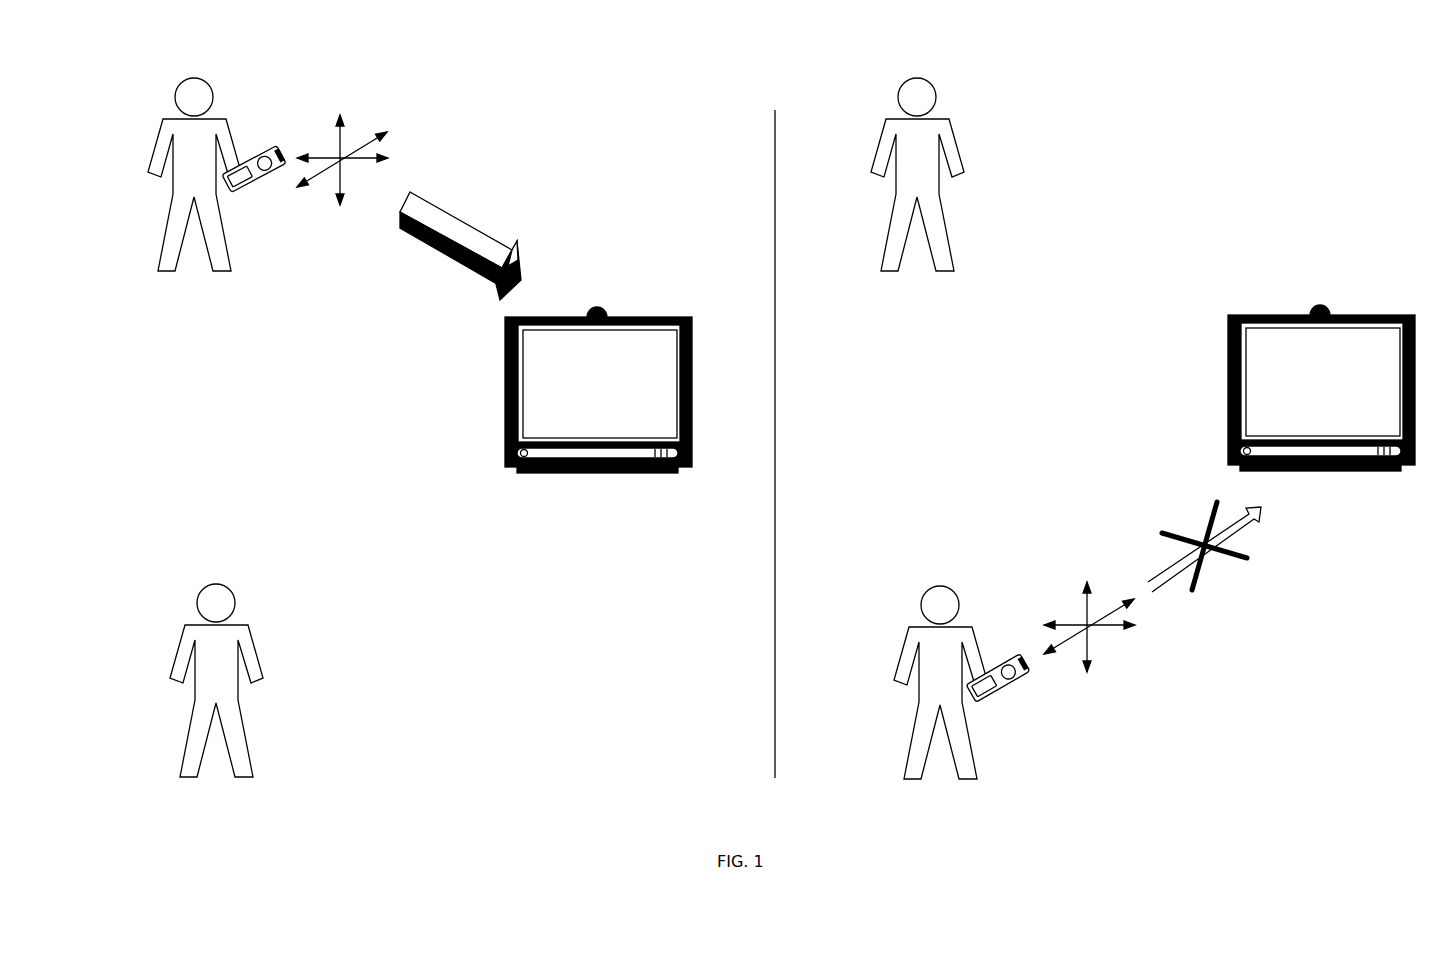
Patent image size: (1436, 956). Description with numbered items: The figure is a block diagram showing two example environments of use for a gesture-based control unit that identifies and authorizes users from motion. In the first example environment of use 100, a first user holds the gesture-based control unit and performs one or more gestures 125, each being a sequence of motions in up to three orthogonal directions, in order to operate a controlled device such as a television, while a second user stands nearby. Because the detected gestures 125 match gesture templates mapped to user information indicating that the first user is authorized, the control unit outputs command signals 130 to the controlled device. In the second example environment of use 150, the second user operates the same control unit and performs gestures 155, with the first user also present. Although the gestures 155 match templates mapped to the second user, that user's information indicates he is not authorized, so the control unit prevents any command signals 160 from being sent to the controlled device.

The first example environment of use 100 is at (465, 95).
The gestures 125 is at (322, 170).
The command signals 130 is at (463, 223).
The second example environment of use 150 is at (1118, 93).
The gestures 155 is at (1072, 633).
The command signals 160 is at (1245, 525).